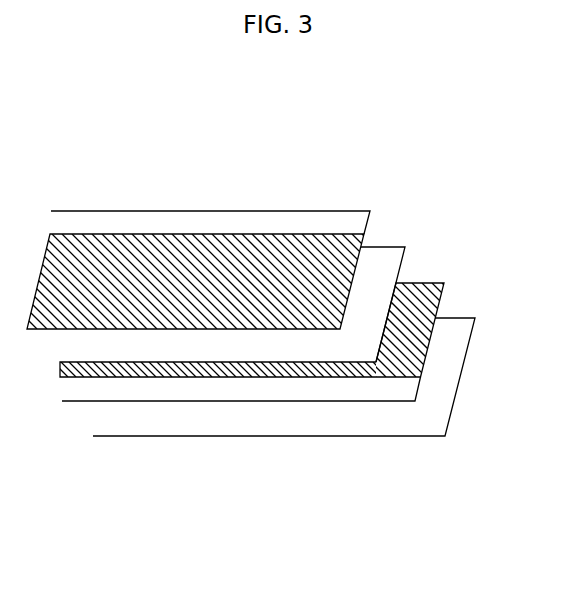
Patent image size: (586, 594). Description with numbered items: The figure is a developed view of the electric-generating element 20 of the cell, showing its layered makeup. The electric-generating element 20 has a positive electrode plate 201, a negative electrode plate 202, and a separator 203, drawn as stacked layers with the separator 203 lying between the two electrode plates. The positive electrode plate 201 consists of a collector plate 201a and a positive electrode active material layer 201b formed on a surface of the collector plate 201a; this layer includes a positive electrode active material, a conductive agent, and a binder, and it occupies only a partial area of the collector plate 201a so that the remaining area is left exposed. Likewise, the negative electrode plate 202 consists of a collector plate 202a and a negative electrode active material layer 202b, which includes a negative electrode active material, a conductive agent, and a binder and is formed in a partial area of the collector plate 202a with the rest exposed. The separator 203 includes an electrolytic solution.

The electric-generating element 20 is at (274, 348).
The positive electrode plate 201 is at (228, 226).
The collector plate 201a is at (143, 222).
The positive electrode active material layer 201b is at (96, 278).
The negative electrode plate 202 is at (290, 344).
The collector plate 202a is at (262, 390).
The negative electrode active material layer 202b is at (393, 350).
The separator 203 is at (382, 258).